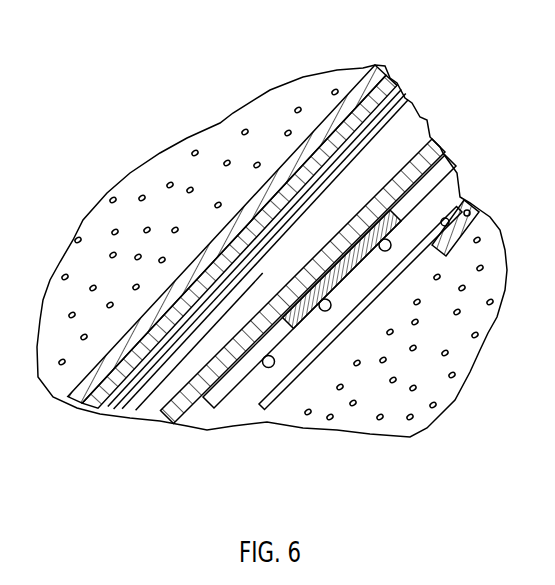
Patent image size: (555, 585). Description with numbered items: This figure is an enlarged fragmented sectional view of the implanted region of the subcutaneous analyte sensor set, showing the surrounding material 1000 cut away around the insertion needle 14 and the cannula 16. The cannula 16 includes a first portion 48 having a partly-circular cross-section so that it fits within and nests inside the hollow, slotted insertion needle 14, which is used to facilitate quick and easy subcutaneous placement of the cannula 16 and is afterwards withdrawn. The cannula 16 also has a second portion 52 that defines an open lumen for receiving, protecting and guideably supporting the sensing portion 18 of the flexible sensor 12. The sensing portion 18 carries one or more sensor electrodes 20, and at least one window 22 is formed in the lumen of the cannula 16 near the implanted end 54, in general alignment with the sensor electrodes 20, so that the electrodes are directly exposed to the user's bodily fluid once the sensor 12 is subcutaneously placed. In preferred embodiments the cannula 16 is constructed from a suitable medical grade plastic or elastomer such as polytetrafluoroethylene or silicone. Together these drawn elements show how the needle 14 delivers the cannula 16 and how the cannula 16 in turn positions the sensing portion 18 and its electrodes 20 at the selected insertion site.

The surrounding material 1000 is at (172, 168).
The insertion needle 14 is at (367, 88).
The cannula 16 is at (146, 326).
The first portion 48 is at (385, 118).
The sensor 12 is at (461, 160).
The sensing portion 18 is at (214, 408).
The sensor electrodes 20 is at (390, 251).
The implanted end 54 is at (262, 409).
The second portion 52 is at (477, 213).
The window 22 is at (410, 437).